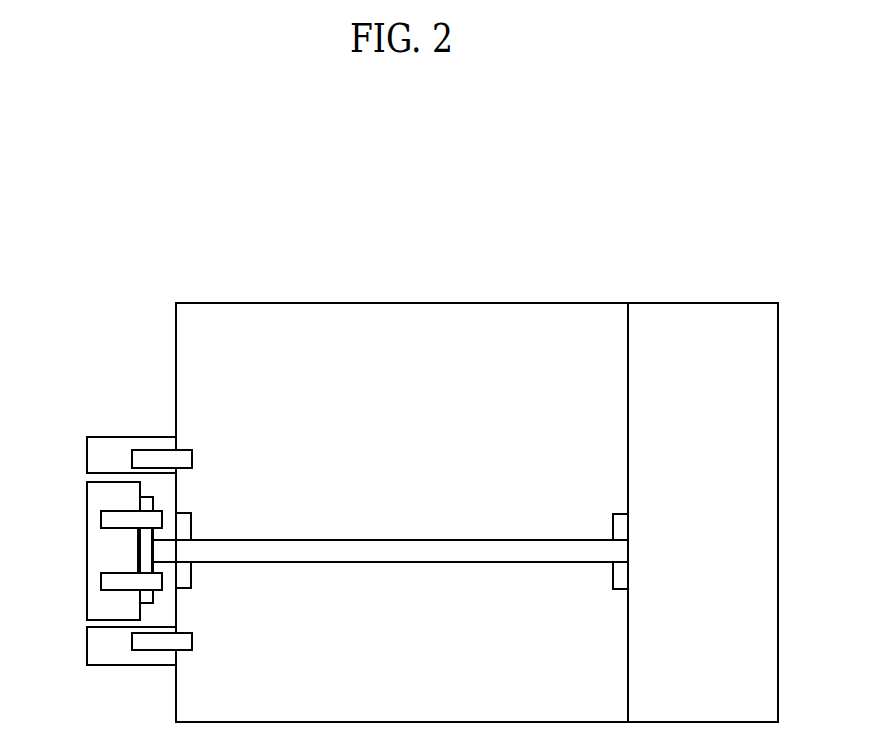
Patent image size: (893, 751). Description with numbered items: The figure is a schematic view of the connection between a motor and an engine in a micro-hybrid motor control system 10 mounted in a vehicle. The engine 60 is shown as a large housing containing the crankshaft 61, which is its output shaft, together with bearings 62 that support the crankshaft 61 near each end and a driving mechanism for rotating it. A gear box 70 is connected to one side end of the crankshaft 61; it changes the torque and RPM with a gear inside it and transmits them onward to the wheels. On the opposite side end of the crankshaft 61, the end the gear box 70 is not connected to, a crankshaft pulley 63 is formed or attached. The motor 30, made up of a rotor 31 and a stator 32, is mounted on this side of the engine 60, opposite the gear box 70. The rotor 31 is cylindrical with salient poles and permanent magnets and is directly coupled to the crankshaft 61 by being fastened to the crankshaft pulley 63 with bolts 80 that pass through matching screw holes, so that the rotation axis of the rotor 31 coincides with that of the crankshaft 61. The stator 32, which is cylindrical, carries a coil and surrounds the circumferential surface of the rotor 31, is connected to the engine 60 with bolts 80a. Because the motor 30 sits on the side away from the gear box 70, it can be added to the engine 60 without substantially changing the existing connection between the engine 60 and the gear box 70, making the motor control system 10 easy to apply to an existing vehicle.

The motor control system 10 is at (655, 222).
The motor 30 is at (90, 412).
The rotor 31 is at (95, 549).
The stator 32 is at (95, 456).
The engine 60 is at (416, 303).
The crankshaft 61 is at (469, 549).
The bearings 62 is at (192, 523).
The crankshaft pulley 63 is at (142, 556).
The gear box 70 is at (705, 303).
The bolts 80 is at (101, 519).
The bolts 80a is at (148, 455).